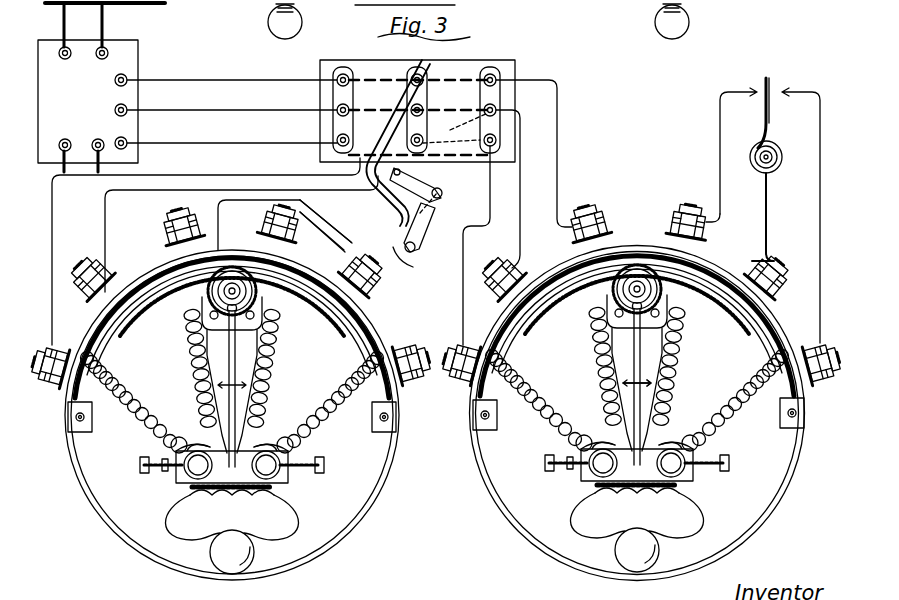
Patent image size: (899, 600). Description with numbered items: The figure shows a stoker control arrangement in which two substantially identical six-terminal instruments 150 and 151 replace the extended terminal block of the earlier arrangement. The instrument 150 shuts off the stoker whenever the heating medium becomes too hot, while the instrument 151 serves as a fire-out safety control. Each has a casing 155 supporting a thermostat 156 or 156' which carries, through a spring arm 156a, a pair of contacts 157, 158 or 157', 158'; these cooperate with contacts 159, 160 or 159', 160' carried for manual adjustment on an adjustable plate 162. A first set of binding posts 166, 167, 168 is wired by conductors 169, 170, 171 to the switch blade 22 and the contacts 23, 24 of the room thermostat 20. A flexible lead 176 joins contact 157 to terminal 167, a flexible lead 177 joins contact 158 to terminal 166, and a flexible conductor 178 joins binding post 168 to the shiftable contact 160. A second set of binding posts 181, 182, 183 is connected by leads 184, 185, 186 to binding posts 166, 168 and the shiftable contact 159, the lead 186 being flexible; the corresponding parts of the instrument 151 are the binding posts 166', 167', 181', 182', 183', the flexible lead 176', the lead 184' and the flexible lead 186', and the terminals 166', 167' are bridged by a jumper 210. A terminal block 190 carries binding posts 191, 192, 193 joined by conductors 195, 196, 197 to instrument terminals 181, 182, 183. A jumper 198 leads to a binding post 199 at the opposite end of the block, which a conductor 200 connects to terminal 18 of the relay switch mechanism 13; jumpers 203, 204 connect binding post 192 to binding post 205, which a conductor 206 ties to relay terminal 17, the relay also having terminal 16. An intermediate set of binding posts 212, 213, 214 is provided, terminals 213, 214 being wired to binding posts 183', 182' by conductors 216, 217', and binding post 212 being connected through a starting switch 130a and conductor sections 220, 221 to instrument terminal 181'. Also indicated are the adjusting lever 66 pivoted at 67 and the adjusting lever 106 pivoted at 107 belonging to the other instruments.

The relay switch mechanism 13 is at (124, 45).
The relay terminal 16 is at (128, 108).
The relay terminal 17 is at (128, 77).
The relay terminal 18 is at (128, 141).
The room thermostat 20 is at (761, 76).
The movable switch blade 22 is at (771, 116).
The contact element 23 is at (786, 85).
The second contact 24 is at (755, 91).
The adjusting lever 66 is at (268, 22).
The pivot 67 is at (265, 7).
The adjusting lever 106 is at (655, 22).
The pivot 107 is at (648, 7).
The starting switch 130a is at (434, 222).
The instrument 150 is at (637, 417).
The instrument 151 is at (232, 415).
The casing 155 is at (620, 540).
The thermostat 156 is at (637, 338).
The thermostat 156' is at (232, 345).
The spring arm 156a is at (678, 373).
The thermostat contact 157 is at (593, 425).
The thermostat contact 157' is at (185, 426).
The thermostat contact 158 is at (691, 419).
The thermostat contact 158' is at (282, 425).
The adjustable contact 159 is at (566, 482).
The adjustable contact 159' is at (143, 484).
The adjustable contact 160 is at (644, 465).
The adjustable contact 160' is at (253, 460).
The adjustable plate 162 is at (707, 502).
The terminal binding post 166 is at (778, 262).
The terminal binding post 166' is at (385, 277).
The terminal binding post 167 is at (693, 204).
The terminal binding post 167' is at (325, 221).
The terminal binding post 168 is at (411, 347).
The conductor 169 is at (792, 204).
The conductor 170 is at (751, 205).
The conductor 171 is at (802, 181).
The flexible lead 176 is at (590, 366).
The flexible lead 176' is at (211, 368).
The flexible lead 177 is at (693, 366).
The flexible conductor 178 is at (741, 398).
The terminal binding post 181 is at (500, 264).
The terminal binding post 181' is at (89, 262).
The terminal binding post 182 is at (598, 207).
The terminal binding post 182' is at (164, 221).
The terminal binding post 183 is at (459, 377).
The terminal binding post 183' is at (64, 346).
The lead 184 is at (637, 326).
The lead 184' is at (232, 328).
The lead 185 is at (748, 348).
The flexible lead 186 is at (534, 398).
The flexible lead 186' is at (232, 407).
The terminal block 190 is at (508, 62).
The binding post 191 is at (497, 110).
The binding post 192 is at (497, 78).
The binding post 193 is at (497, 140).
The conductor 195 is at (543, 247).
The conductor 196 is at (558, 174).
The conductor 197 is at (487, 224).
The jumper 198 is at (475, 178).
The terminal binding post 199 is at (337, 144).
The conductor 200 is at (232, 155).
The jumper 203 is at (444, 110).
The jumper 204 is at (368, 110).
The binding post 205 is at (335, 80).
The conductor 206 is at (308, 97).
The jumper 210 is at (336, 234).
The intermediate binding post 212 is at (461, 117).
The intermediate binding post 213 is at (412, 129).
The intermediate binding post 214 is at (451, 141).
The conductor 216 is at (215, 251).
The conductor 217' is at (260, 222).
The conductor section 220 is at (400, 174).
The conductor section 221 is at (425, 261).